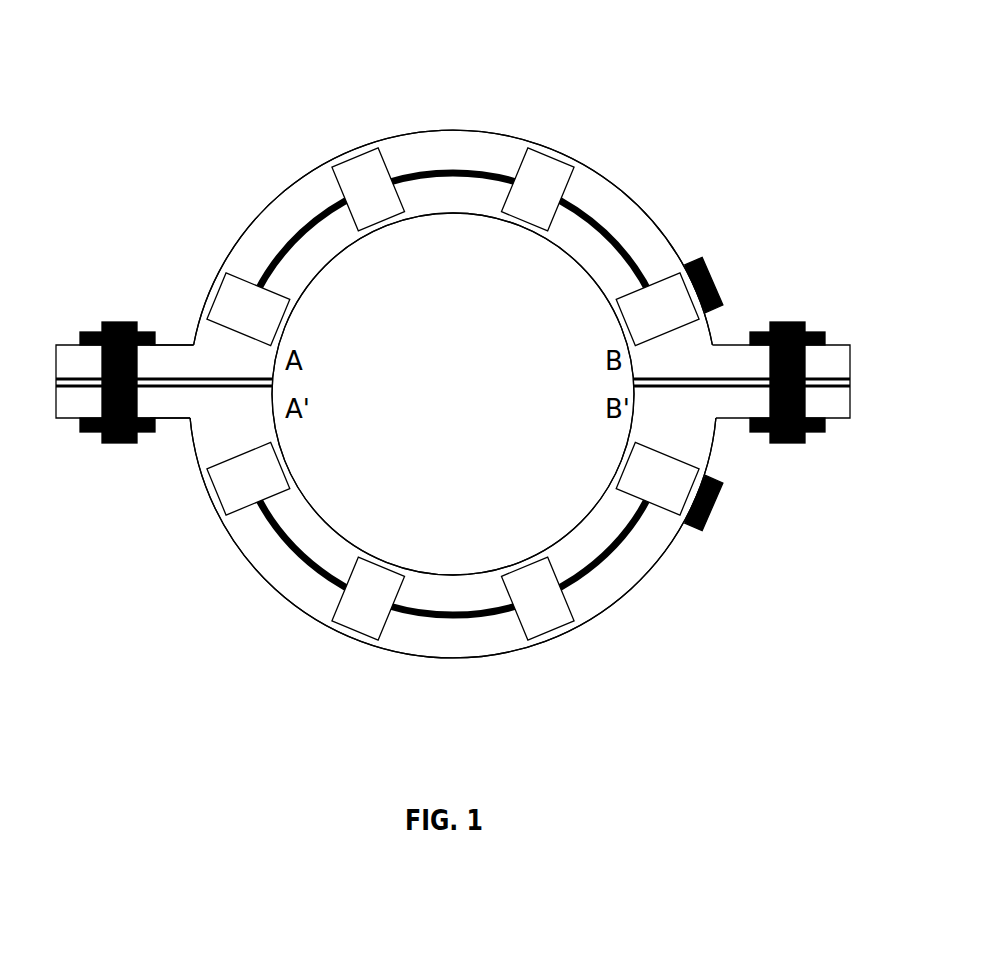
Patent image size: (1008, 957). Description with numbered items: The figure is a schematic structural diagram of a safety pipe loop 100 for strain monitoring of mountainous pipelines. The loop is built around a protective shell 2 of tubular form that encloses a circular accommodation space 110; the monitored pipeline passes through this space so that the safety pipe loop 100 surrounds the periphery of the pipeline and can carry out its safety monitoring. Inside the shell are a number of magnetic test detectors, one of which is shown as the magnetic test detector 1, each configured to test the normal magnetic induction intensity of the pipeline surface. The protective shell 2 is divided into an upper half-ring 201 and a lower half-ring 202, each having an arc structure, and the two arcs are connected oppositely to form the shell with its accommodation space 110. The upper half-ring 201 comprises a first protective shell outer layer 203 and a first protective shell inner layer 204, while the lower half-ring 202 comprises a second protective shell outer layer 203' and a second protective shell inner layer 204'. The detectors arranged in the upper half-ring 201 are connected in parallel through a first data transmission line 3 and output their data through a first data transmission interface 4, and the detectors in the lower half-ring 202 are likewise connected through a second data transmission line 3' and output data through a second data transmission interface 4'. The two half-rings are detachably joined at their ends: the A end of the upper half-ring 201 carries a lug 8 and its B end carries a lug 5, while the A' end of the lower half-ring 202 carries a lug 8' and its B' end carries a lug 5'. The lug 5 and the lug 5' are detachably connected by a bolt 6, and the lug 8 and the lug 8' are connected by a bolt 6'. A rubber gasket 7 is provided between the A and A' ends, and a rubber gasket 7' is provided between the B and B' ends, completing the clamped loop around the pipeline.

The safety pipe loop 100 is at (118, 35).
The accommodation space 110 is at (478, 448).
The magnetic test detector 1 is at (552, 175).
The protective shell 2 is at (628, 192).
The first data transmission line 3 is at (453, 185).
The second data transmission line 3' is at (453, 570).
The first data transmission interface 4 is at (747, 256).
The second data transmission interface 4' is at (727, 543).
The lug 5 is at (810, 363).
The lug 5' is at (783, 451).
The bolt 6 is at (809, 403).
The bolt 6' is at (117, 347).
The rubber gasket 7 is at (772, 402).
The rubber gasket 7' is at (143, 365).
The lug 8 is at (116, 328).
The lug 8' is at (120, 439).
The upper half-ring 201 is at (175, 343).
The lower half-ring 202 is at (175, 420).
The first protective shell outer layer 203 is at (453, 237).
The second protective shell outer layer 203' is at (453, 588).
The first protective shell inner layer 204 is at (453, 303).
The second protective shell inner layer 204' is at (453, 484).